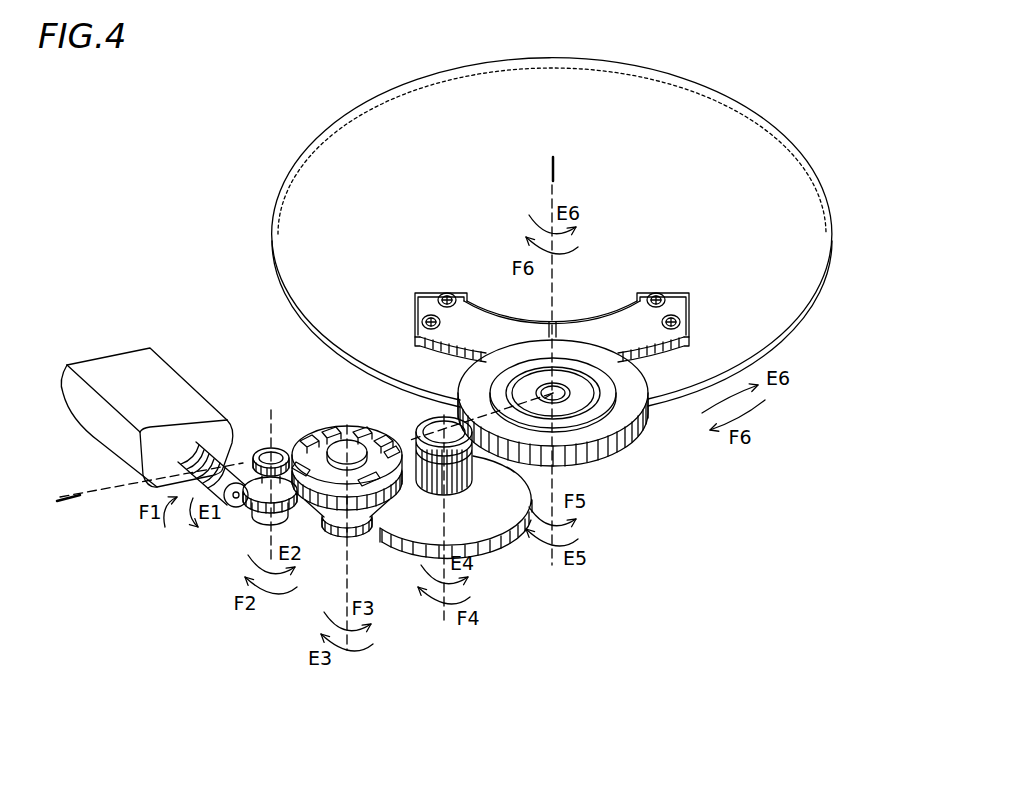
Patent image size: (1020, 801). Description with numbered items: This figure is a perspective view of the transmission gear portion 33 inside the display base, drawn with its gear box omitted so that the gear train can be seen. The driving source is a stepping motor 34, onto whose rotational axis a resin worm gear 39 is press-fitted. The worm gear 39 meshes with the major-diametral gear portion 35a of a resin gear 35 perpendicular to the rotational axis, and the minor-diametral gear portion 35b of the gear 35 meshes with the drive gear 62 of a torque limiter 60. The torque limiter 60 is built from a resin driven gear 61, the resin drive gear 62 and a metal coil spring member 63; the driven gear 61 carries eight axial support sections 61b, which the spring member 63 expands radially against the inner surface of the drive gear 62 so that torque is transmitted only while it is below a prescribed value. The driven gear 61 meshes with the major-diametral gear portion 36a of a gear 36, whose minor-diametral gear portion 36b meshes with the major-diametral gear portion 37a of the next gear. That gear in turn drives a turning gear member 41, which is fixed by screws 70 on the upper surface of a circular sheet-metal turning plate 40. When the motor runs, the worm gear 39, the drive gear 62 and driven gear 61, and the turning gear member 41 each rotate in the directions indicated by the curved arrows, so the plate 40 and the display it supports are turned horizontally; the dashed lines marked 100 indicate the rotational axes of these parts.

The transmission gear portion 33 is at (616, 566).
The stepping motor 34 is at (123, 367).
The gear 35 is at (212, 347).
The major-diametral gear portion 35a is at (263, 452).
The minor-diametral gear portion 35b is at (262, 486).
The gear 36 is at (487, 556).
The major-diametral gear portion 36a is at (470, 532).
The minor-diametral gear portion 36b is at (462, 482).
The major-diametral gear portion 37a is at (642, 433).
The worm gear 39 is at (178, 375).
The turning plate 40 is at (423, 132).
The turning gear member 41 is at (597, 326).
The torque limiter 60 is at (347, 518).
The driven gear 61 is at (372, 500).
The support sections 61b is at (306, 441).
The drive gear 62 is at (365, 526).
The spring member 63 is at (303, 455).
The screws 70 is at (432, 316).
The rotation axis 100 is at (559, 168).